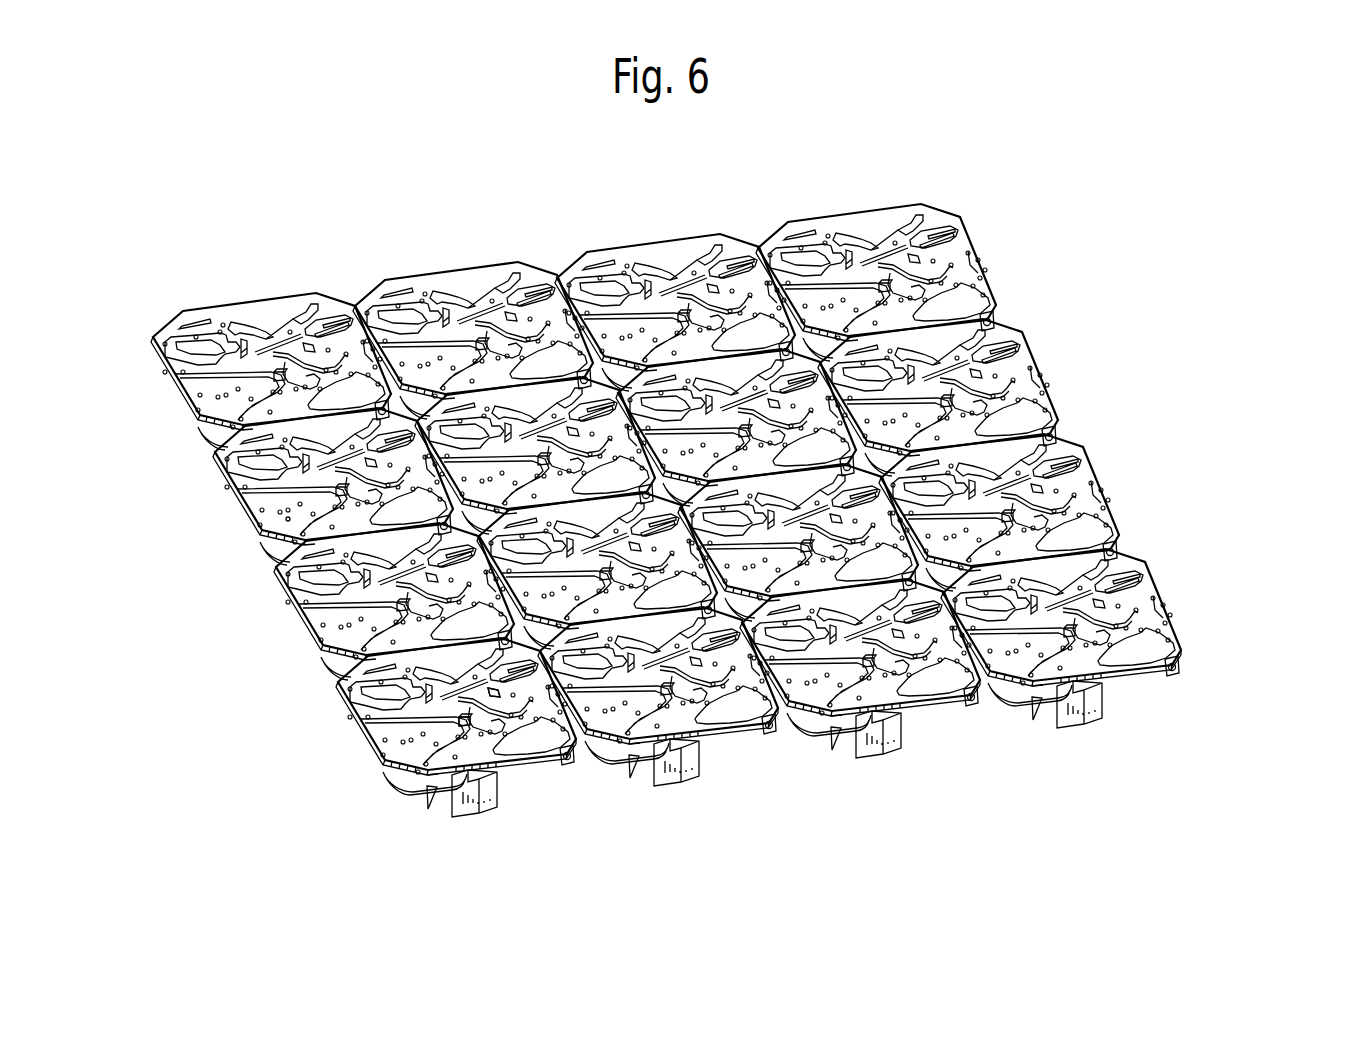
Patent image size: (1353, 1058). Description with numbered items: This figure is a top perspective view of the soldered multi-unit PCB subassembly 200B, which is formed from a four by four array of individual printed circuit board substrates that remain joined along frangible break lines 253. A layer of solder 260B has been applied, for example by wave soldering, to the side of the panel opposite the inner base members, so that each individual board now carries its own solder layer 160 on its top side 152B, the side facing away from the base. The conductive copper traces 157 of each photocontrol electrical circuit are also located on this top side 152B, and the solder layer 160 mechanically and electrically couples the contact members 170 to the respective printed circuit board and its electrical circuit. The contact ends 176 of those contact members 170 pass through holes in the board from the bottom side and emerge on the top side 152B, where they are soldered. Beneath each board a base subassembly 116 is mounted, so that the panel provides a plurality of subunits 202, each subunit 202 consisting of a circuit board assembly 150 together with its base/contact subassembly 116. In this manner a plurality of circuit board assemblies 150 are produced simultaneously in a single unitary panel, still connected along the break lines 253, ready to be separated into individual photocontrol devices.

The soldered multi-unit PCB subassembly 200B is at (965, 140).
The circuit board assembly 150 is at (805, 200).
The subunit 202 is at (883, 190).
The frangible break lines 253 is at (357, 307).
The solder layer 160 is at (210, 437).
The layer of solder 260B is at (283, 517).
The top side 152B is at (338, 683).
The conductive traces 157 is at (377, 755).
The contact ends 176 is at (493, 683).
The contact members 170 is at (467, 808).
The base subassembly 116 is at (500, 808).